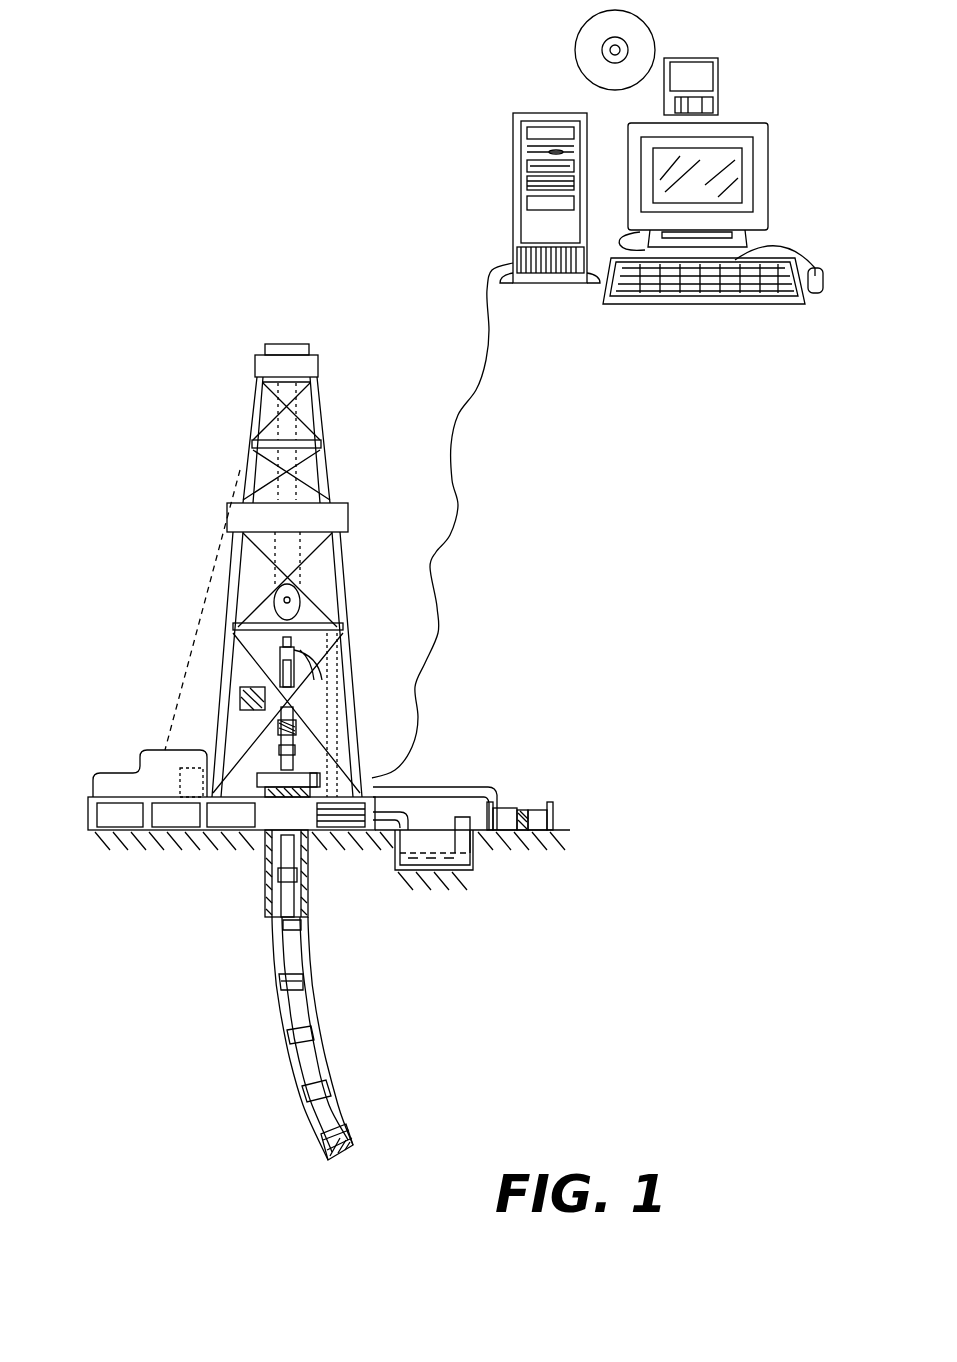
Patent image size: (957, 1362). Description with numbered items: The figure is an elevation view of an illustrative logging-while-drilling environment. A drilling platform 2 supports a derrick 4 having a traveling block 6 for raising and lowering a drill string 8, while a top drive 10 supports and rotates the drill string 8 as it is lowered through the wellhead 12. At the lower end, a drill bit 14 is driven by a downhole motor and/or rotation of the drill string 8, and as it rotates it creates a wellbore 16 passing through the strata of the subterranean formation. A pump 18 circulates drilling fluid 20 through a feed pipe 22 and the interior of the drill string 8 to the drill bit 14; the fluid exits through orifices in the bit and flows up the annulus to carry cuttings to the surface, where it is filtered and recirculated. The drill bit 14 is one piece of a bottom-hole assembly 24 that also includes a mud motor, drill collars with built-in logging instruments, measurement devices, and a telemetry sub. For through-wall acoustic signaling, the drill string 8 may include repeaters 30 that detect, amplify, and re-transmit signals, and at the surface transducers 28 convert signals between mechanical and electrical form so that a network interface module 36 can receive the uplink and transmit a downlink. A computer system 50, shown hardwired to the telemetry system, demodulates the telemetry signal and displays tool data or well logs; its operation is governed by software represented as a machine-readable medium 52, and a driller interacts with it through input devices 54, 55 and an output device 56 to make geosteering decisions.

The drilling platform 2 is at (86, 808).
The derrick 4 is at (332, 473).
The traveling block 6 is at (300, 597).
The drill string 8 is at (290, 960).
The top drive 10 is at (290, 663).
The wellhead 12 is at (307, 773).
The drill bit 14 is at (345, 1130).
The wellbore 16 is at (307, 965).
The pump 18 is at (503, 802).
The drilling fluid 20 is at (402, 870).
The feed pipe 22 is at (445, 787).
The bottom-hole assembly 24 is at (328, 1155).
The transducers 28 is at (290, 707).
The repeaters 30 is at (278, 985).
The network interface module 36 is at (182, 768).
The computer system 50 is at (588, 198).
The non-transitory machine-readable medium 52 is at (683, 57).
The input device 54 is at (753, 306).
The input device 55 is at (824, 283).
The output device 56 is at (769, 198).